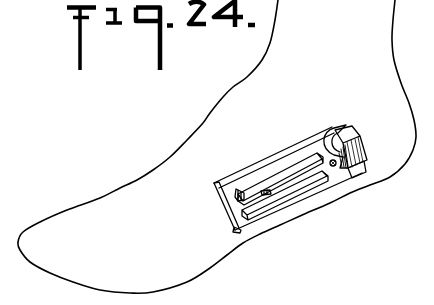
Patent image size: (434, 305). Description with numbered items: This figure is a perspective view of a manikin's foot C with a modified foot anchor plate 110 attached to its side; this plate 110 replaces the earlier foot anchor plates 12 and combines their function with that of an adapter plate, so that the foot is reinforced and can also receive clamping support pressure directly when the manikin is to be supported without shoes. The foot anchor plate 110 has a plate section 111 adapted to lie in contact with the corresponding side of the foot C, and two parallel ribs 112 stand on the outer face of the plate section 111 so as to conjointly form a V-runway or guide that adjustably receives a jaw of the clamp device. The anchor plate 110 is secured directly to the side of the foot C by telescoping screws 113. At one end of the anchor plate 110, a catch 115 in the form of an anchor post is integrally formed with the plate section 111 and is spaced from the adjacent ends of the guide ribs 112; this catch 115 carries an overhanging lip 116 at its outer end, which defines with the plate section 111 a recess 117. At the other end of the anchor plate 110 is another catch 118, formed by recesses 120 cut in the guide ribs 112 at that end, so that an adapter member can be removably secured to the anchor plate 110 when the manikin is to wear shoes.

The foot anchor plate 110 is at (276, 174).
The plate section 111 is at (258, 219).
The guide ribs 112 is at (294, 147).
The telescoping screws 113 is at (328, 125).
The catch 115 is at (367, 156).
The overhanging lip 116 is at (357, 178).
The recess 117 is at (346, 126).
The catch 118 is at (226, 220).
The recesses 120 is at (235, 195).
The foot anchor plates 12 is at (423, 162).
The manikin's foot C is at (392, 57).